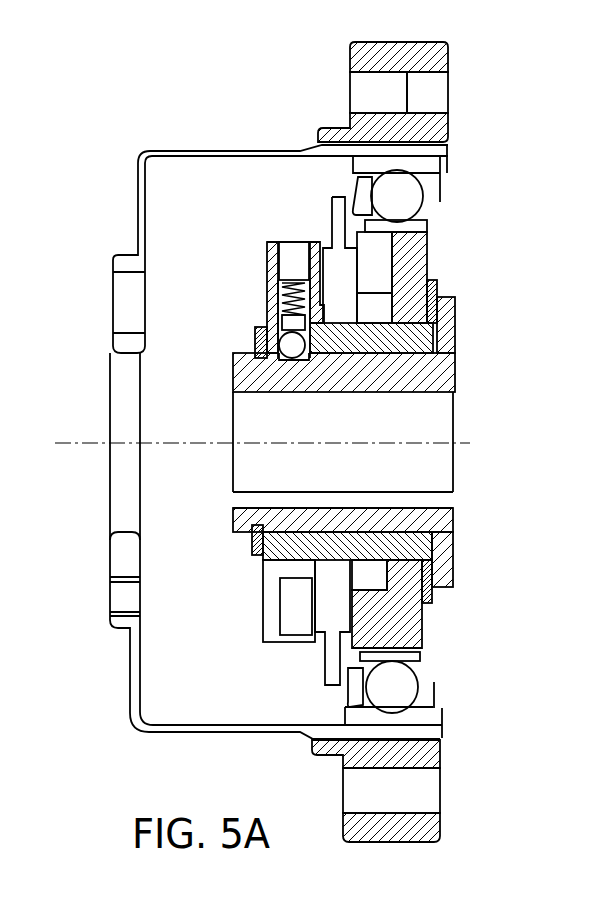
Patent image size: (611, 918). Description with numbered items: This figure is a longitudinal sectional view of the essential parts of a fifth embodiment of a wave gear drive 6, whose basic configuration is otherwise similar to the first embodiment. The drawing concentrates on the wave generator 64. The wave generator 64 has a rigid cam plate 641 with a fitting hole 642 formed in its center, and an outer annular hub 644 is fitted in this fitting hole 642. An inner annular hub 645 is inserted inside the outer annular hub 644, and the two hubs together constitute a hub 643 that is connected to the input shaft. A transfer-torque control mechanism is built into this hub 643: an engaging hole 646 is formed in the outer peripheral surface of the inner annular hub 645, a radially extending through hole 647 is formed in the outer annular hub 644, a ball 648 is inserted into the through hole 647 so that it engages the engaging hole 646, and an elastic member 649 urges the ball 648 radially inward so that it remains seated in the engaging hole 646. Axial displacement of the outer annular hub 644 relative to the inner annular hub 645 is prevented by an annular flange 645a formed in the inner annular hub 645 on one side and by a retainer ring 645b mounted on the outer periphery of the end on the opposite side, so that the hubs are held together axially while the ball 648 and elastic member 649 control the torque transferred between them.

The wave gear drive 6 is at (200, 112).
The wave generator 64 is at (465, 191).
The rigid cam plate 641 is at (428, 246).
The fitting hole 642 is at (437, 330).
The hub 643 is at (522, 333).
The outer annular hub 644 is at (413, 352).
The inner annular hub 645 is at (425, 378).
The annular flange 645a is at (433, 573).
The retainer ring 645b is at (257, 340).
The engaging hole 646 is at (284, 352).
The through hole 647 is at (280, 283).
The ball 648 is at (297, 350).
The elastic member 649 is at (282, 303).